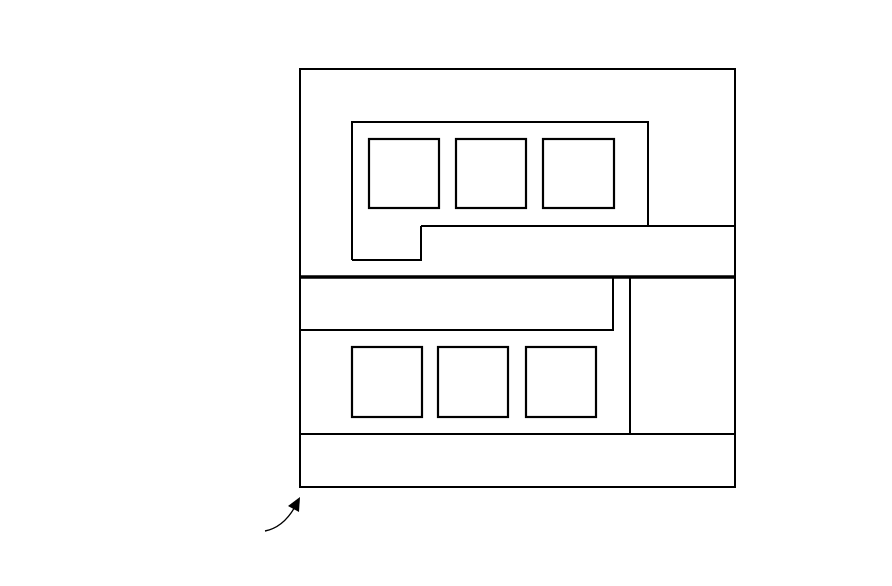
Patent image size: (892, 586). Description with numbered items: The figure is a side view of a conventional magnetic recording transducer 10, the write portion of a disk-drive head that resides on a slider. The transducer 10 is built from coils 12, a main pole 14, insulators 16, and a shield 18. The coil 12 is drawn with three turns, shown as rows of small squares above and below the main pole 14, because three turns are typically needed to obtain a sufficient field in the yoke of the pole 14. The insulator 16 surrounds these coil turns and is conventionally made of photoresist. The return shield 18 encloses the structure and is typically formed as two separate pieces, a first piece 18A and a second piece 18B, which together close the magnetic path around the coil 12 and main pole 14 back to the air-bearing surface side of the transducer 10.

The magnetic recording transducer 10 is at (476, 319).
The coils 12 is at (612, 363).
The main pole 14 is at (300, 289).
The insulators 16 is at (300, 268).
The shield 18 is at (487, 271).
The first shield piece 18A is at (300, 157).
The second shield piece 18B is at (735, 96).